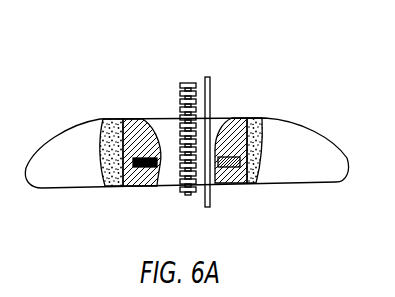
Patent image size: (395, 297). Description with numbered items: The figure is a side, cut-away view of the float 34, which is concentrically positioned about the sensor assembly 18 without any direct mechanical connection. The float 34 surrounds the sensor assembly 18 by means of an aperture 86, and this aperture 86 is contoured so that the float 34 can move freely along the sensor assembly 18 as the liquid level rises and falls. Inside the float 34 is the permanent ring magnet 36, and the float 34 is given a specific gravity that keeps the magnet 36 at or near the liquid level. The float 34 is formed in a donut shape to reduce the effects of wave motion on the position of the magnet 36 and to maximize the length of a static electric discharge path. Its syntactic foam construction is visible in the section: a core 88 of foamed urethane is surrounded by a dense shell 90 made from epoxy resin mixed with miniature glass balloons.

The sensor assembly 18 is at (183, 67).
The float 34 is at (278, 120).
The permanent ring magnet 36 is at (142, 188).
The aperture 86 is at (165, 130).
The core 88 is at (257, 117).
The dense shell 90 is at (238, 117).